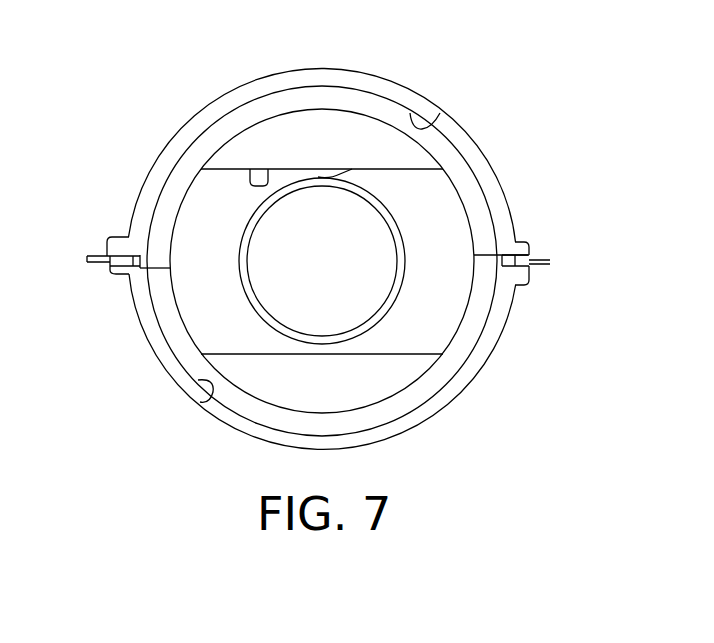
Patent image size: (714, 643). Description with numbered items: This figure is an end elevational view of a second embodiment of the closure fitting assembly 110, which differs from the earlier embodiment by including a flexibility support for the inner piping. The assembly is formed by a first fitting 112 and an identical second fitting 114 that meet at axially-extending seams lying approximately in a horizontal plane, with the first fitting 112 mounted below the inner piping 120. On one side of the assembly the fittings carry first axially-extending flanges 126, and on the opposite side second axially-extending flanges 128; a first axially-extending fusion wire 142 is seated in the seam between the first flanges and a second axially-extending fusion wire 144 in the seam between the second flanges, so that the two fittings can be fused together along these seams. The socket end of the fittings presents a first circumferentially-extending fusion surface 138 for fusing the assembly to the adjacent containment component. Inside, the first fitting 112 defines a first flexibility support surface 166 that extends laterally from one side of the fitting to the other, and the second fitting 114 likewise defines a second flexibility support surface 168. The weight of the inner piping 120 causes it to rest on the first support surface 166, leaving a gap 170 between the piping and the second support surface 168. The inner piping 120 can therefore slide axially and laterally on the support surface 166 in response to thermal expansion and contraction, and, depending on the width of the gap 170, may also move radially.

The closure fitting assembly 110 is at (319, 242).
The first fitting 112 is at (479, 366).
The second fitting 114 is at (235, 87).
The inner piping 120 is at (237, 262).
The first axially-extending flange 126 is at (516, 240).
The second axially-extending flange 128 is at (125, 236).
The first circumferentially-extending fusion surface 138 is at (432, 113).
The first axially-extending fusion wire 142 is at (522, 260).
The second axially-extending fusion wire 144 is at (112, 264).
The first flexibility support surface 166 is at (245, 353).
The second flexibility support surface 168 is at (258, 169).
The gap 170 is at (353, 169).